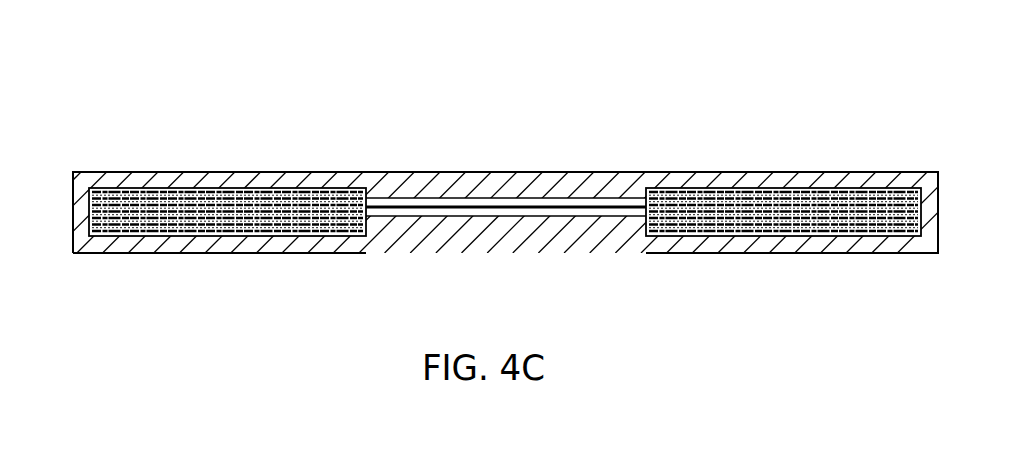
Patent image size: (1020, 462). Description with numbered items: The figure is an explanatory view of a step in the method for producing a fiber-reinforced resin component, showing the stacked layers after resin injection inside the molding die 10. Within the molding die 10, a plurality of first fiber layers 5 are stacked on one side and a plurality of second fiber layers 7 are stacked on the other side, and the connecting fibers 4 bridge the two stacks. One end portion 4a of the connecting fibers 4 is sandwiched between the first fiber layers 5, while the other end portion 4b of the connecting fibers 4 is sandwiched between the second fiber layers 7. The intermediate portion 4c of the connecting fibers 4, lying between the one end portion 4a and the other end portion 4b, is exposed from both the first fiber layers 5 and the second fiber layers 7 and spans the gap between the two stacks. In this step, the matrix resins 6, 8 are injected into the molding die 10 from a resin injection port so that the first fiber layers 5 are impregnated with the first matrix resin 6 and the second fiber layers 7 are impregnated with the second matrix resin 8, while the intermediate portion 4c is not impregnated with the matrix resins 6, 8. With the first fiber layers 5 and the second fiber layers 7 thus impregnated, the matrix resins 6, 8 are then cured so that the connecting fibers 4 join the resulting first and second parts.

The connecting fibers 4 is at (505, 173).
The one end portion of the connecting fibers 4a is at (270, 192).
The other end portion of the connecting fibers 4b is at (752, 192).
The intermediate portion of the connecting fibers 4c is at (542, 208).
The first fiber layers 5 is at (136, 192).
The matrix resin (first resin) 6 is at (213, 238).
The second fiber layers 7 is at (877, 192).
The matrix resin (second resin) 8 is at (798, 227).
The molding die 10 is at (463, 245).